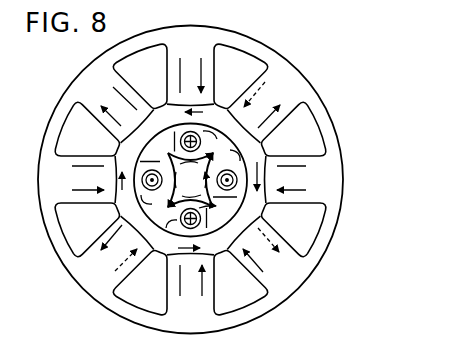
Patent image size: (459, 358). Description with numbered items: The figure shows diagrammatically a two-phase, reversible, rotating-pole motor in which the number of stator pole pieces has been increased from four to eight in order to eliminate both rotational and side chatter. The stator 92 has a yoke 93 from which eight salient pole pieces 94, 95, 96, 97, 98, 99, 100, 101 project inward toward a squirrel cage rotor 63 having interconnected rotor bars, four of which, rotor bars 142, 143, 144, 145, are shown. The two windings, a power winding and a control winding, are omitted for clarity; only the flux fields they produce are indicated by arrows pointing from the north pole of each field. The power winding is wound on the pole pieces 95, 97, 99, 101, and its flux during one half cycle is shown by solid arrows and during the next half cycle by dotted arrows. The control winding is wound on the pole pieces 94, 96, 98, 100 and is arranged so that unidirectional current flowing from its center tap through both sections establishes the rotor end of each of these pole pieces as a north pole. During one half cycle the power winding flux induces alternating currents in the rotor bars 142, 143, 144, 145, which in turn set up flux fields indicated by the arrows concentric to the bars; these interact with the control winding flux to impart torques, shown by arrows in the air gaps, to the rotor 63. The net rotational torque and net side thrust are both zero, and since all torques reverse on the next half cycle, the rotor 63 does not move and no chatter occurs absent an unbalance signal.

The stator 92 is at (200, 25).
The yoke 93 is at (252, 45).
The salient pole piece 94 is at (178, 56).
The salient pole piece 95 is at (268, 98).
The salient pole piece 96 is at (302, 184).
The salient pole piece 97 is at (267, 280).
The salient pole piece 98 is at (181, 314).
The salient pole piece 99 is at (87, 272).
The salient pole piece 100 is at (84, 184).
The salient pole piece 101 is at (87, 98).
The squirrel cage rotor 63 is at (200, 188).
The rotor bar 142 is at (197, 139).
The rotor bar 143 is at (231, 178).
The rotor bar 144 is at (195, 223).
The rotor bar 145 is at (150, 181).